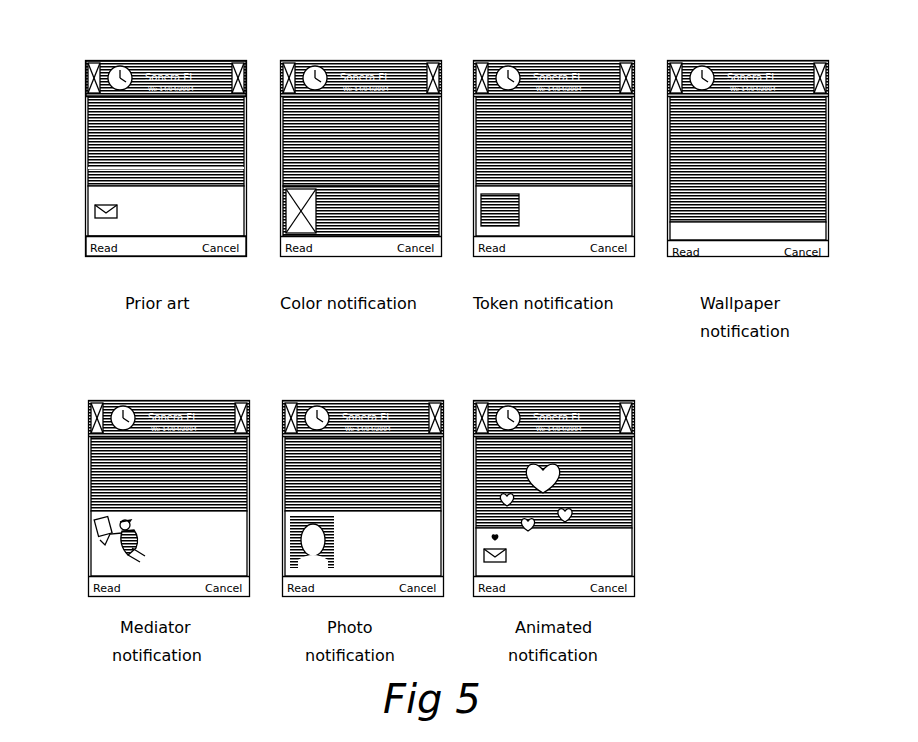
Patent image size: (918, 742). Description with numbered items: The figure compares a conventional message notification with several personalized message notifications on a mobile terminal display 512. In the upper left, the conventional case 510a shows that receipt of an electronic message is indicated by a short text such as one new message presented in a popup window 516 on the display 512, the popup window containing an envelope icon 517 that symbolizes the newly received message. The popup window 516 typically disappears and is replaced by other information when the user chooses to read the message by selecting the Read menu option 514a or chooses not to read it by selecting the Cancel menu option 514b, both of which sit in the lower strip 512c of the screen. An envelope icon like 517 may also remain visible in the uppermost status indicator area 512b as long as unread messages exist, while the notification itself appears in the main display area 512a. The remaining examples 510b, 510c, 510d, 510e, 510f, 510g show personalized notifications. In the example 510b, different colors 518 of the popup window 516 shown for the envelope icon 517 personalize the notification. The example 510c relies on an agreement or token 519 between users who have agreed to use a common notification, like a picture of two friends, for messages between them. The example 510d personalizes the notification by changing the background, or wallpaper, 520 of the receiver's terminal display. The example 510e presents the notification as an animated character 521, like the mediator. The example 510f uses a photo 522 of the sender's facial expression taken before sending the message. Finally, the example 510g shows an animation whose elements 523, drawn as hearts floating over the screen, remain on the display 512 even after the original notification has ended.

The conventional message notification 510a is at (136, 46).
The color notification example 510b is at (353, 46).
The token notification example 510c is at (546, 46).
The wallpaper notification example 510d is at (756, 46).
The mediator notification example 510e is at (133, 386).
The photo notification example 510f is at (348, 392).
The animated notification example 510g is at (544, 386).
The display 512 is at (85, 124).
The main display area 512a is at (88, 168).
The uppermost status indicator area 512b is at (86, 76).
The softkey bar 512c is at (88, 247).
The Read menu option 514a is at (112, 258).
The Cancel menu option 514b is at (220, 258).
The popup window 516 is at (90, 190).
The envelope icon 517 is at (95, 212).
The different colors 518 is at (350, 232).
The token 519 is at (486, 228).
The background (wallpaper) 520 is at (674, 210).
The animated character 521 is at (96, 539).
The photo 522 is at (288, 562).
The animation elements 523 is at (570, 518).